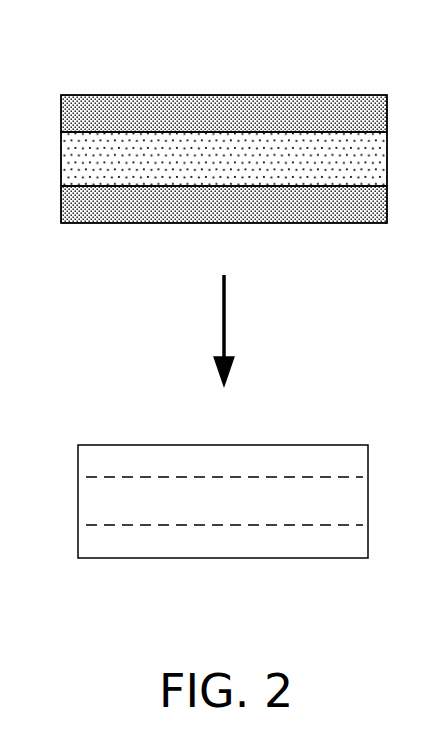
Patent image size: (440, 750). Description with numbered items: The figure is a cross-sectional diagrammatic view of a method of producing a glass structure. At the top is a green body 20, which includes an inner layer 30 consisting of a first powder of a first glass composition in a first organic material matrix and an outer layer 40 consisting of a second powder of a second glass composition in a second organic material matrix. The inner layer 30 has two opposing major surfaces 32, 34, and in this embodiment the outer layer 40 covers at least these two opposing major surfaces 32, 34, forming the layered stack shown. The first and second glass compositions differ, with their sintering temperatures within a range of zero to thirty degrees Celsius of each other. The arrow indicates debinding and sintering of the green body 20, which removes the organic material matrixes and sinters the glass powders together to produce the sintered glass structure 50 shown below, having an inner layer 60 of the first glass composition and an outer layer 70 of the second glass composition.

The green body 20 is at (199, 169).
The inner layer 30 is at (70, 170).
The major surface 32 is at (255, 133).
The major surface 34 is at (300, 187).
The outer layer 40 is at (78, 110).
The sintered glass structure 50 is at (200, 527).
The inner layer 60 is at (223, 501).
The outer layer 70 is at (93, 463).